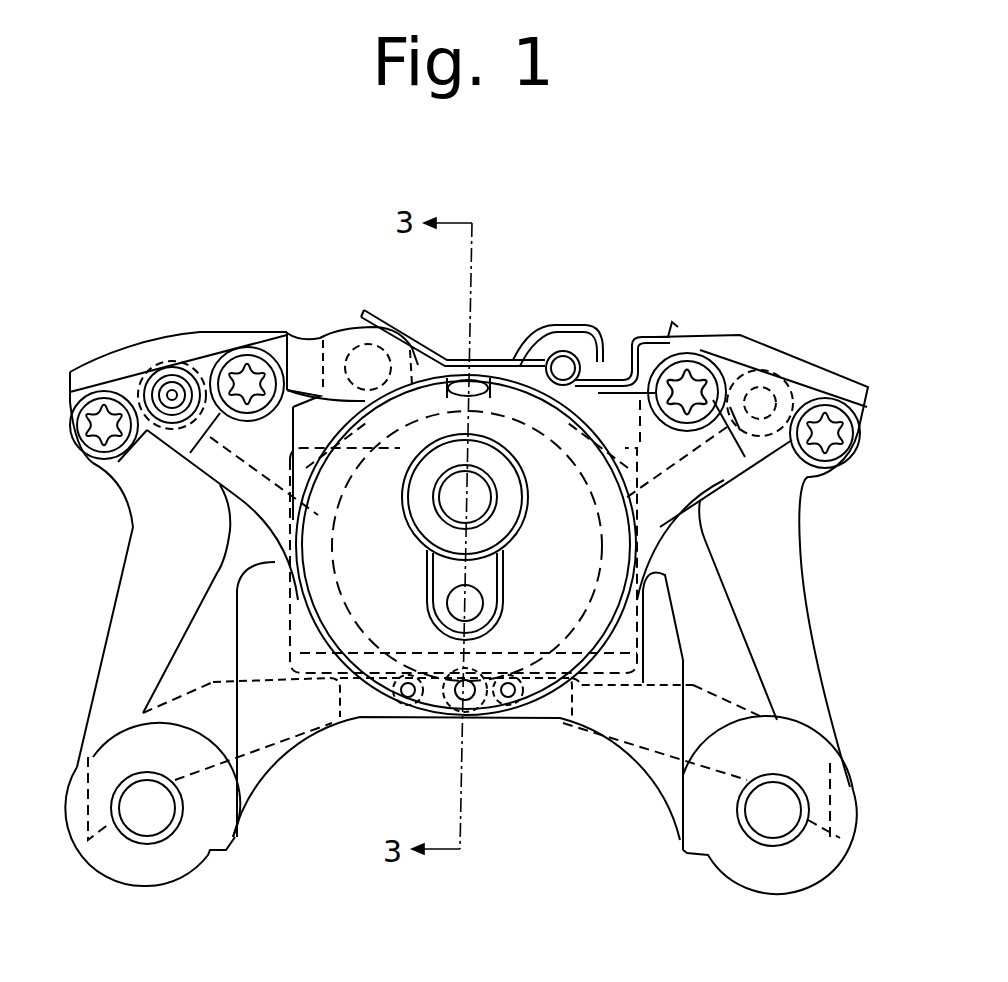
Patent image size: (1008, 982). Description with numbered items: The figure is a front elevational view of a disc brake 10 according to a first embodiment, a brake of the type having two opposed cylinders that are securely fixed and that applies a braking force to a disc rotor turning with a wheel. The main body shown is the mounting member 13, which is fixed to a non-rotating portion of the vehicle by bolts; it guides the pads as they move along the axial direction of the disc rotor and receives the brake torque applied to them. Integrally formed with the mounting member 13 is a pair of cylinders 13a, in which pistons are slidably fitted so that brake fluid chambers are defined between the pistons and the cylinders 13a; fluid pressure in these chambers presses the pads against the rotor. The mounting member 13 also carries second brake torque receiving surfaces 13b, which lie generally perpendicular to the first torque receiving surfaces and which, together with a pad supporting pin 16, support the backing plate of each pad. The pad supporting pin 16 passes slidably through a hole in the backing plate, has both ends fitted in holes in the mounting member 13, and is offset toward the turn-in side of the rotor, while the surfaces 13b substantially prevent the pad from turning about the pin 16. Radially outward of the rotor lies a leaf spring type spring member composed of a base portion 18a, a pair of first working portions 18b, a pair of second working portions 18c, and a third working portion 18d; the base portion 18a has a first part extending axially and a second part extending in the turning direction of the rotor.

The disc brake 10 is at (836, 358).
The mounting member 13 is at (750, 688).
The cylinders 13a is at (360, 640).
The second brake torque receiving surfaces 13b is at (643, 683).
The pad supporting pin 16 is at (567, 365).
The base portion 18a is at (668, 328).
The first working portions 18b is at (480, 380).
The second working portions 18c is at (557, 322).
The third working portion 18d is at (392, 315).